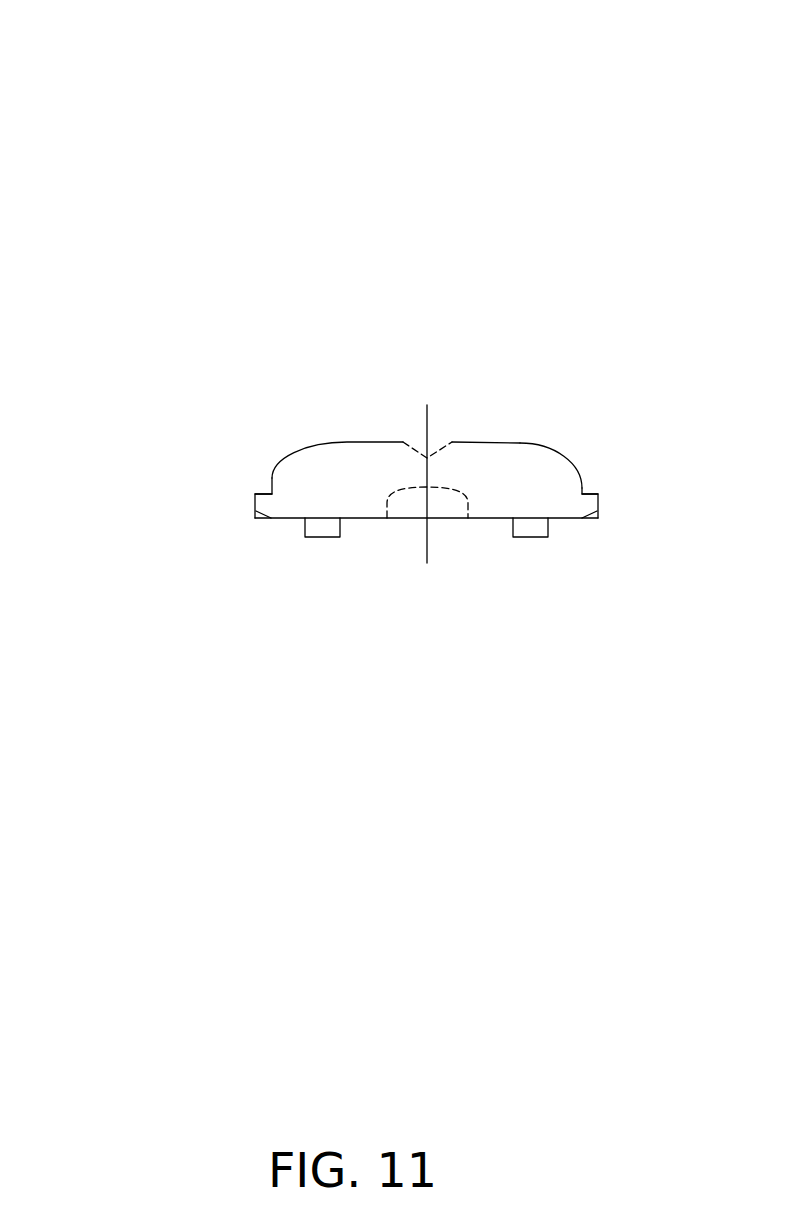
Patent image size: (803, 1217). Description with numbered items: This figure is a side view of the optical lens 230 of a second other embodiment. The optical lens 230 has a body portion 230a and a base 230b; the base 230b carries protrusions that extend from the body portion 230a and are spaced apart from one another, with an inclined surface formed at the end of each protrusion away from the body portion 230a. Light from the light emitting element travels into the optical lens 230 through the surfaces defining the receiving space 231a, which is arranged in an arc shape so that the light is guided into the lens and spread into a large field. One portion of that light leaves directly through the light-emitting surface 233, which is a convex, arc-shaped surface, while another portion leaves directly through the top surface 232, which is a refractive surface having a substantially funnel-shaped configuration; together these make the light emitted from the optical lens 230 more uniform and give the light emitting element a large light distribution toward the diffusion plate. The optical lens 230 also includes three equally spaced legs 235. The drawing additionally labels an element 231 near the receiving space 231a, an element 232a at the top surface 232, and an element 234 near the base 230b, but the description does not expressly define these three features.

The optical lens 230 is at (177, 53).
The body portion 230a is at (312, 470).
The base 230b is at (265, 502).
The bottom surface 231 is at (368, 520).
The receiving space 231a is at (442, 508).
The top surface 232 is at (420, 452).
The bottom of concave portion 232a is at (430, 443).
The light-emitting surface 233 is at (548, 450).
The protrusion 234 is at (258, 518).
The legs 235 is at (535, 532).